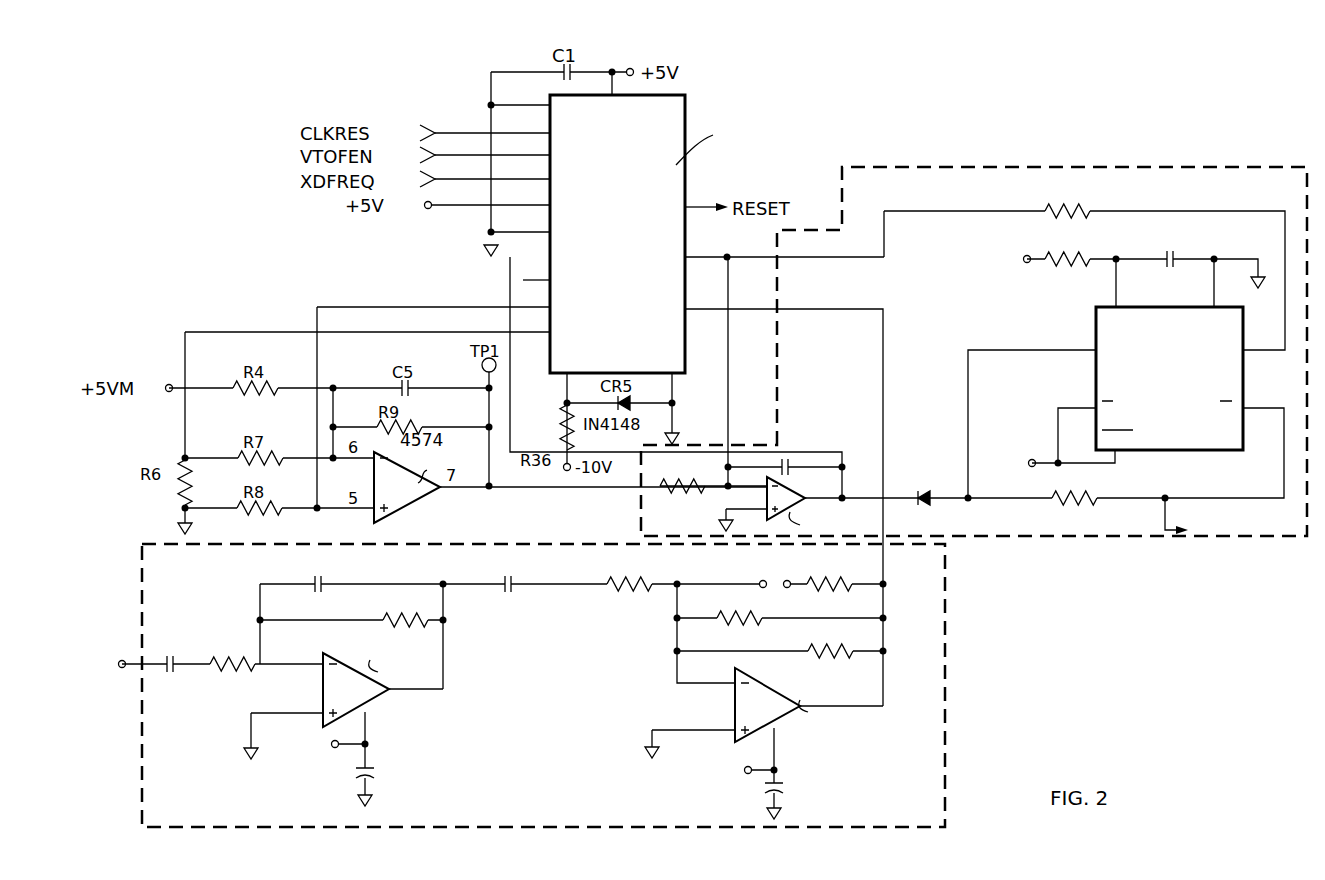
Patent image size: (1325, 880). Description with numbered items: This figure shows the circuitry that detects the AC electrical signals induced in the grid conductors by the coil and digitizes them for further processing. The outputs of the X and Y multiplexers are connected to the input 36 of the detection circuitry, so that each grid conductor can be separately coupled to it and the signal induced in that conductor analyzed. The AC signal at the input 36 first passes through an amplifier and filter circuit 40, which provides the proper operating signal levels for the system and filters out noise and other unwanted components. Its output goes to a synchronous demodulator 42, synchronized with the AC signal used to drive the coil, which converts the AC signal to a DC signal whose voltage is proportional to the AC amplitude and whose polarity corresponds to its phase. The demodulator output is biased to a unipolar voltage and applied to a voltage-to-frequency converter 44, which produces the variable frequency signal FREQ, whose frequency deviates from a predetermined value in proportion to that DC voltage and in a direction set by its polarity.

The input 36 is at (121, 672).
The amplifier and filter circuit 40 is at (152, 528).
The synchronous demodulator 42 is at (713, 100).
The voltage-to-frequency converter 44 is at (972, 166).